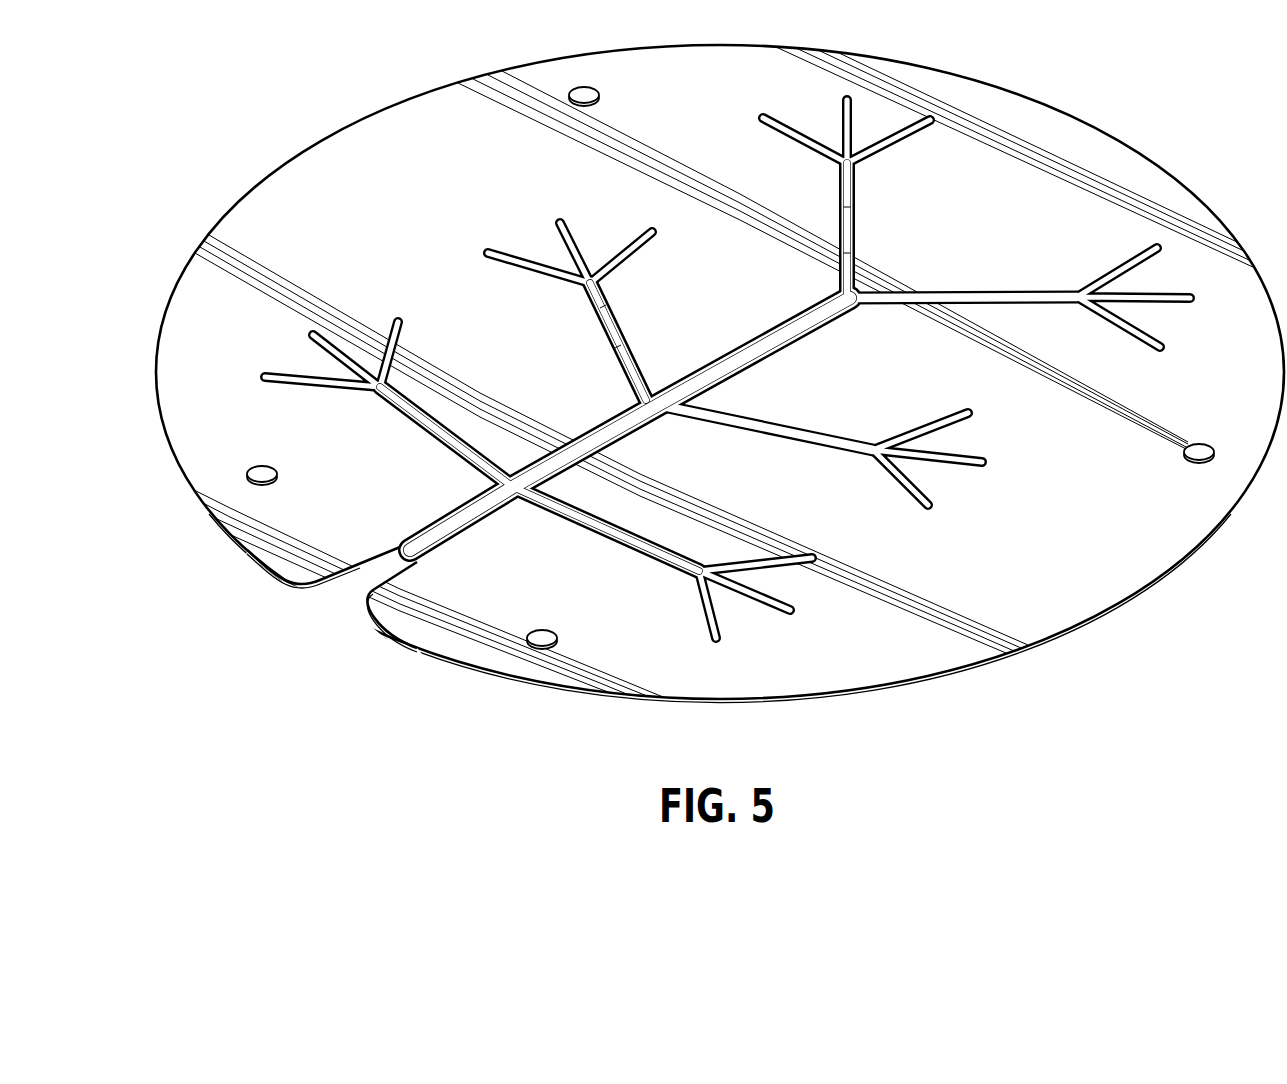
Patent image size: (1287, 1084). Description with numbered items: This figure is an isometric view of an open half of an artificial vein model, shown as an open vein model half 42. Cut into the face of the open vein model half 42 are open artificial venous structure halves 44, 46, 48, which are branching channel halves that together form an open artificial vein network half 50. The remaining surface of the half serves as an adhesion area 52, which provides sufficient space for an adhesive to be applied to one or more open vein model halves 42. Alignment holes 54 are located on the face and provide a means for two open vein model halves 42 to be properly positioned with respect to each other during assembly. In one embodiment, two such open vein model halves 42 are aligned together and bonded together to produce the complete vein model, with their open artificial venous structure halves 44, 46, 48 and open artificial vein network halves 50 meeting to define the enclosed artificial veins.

The open vein model half 42 is at (246, 557).
The open artificial venous structure half 44 is at (786, 138).
The open artificial venous structure half 46 is at (967, 296).
The open artificial venous structure half 48 is at (748, 350).
The open artificial vein network half 50 is at (494, 241).
The adhesion area 52 is at (1040, 529).
The alignment holes 54 is at (598, 92).